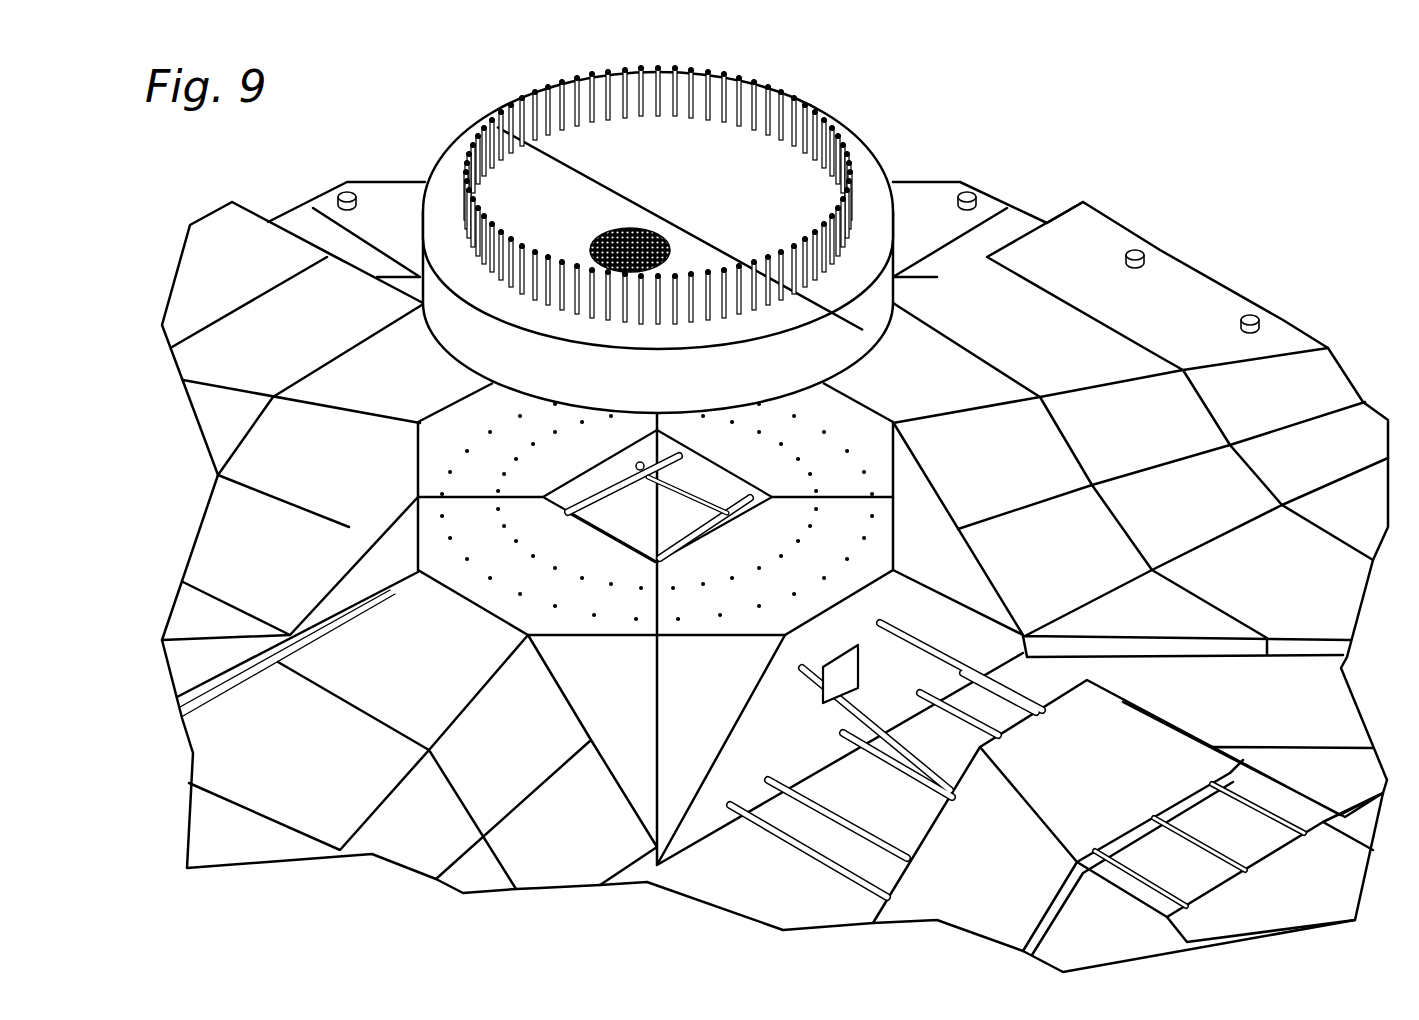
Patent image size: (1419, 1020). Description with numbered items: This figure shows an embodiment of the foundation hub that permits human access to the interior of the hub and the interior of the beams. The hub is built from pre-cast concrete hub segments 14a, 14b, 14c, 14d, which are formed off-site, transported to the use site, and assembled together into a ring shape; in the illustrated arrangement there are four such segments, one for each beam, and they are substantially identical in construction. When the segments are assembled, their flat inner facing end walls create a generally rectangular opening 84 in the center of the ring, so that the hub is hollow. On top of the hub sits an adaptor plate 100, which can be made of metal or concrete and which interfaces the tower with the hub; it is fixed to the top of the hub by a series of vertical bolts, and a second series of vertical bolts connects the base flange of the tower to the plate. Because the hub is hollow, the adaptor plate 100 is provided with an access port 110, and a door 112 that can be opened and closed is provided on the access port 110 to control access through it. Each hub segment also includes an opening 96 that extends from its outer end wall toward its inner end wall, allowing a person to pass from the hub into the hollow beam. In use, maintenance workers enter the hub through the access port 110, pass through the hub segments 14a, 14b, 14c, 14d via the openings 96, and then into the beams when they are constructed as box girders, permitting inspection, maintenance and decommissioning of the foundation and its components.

The adaptor plate 100 is at (870, 145).
The access port 110 is at (653, 222).
The door 112 is at (613, 222).
The rectangular opening 84 is at (722, 495).
The opening 96 is at (850, 668).
The hub segment 14a is at (767, 575).
The hub segment 14b is at (494, 548).
The hub segment 14c is at (463, 420).
The hub segment 14d is at (836, 398).